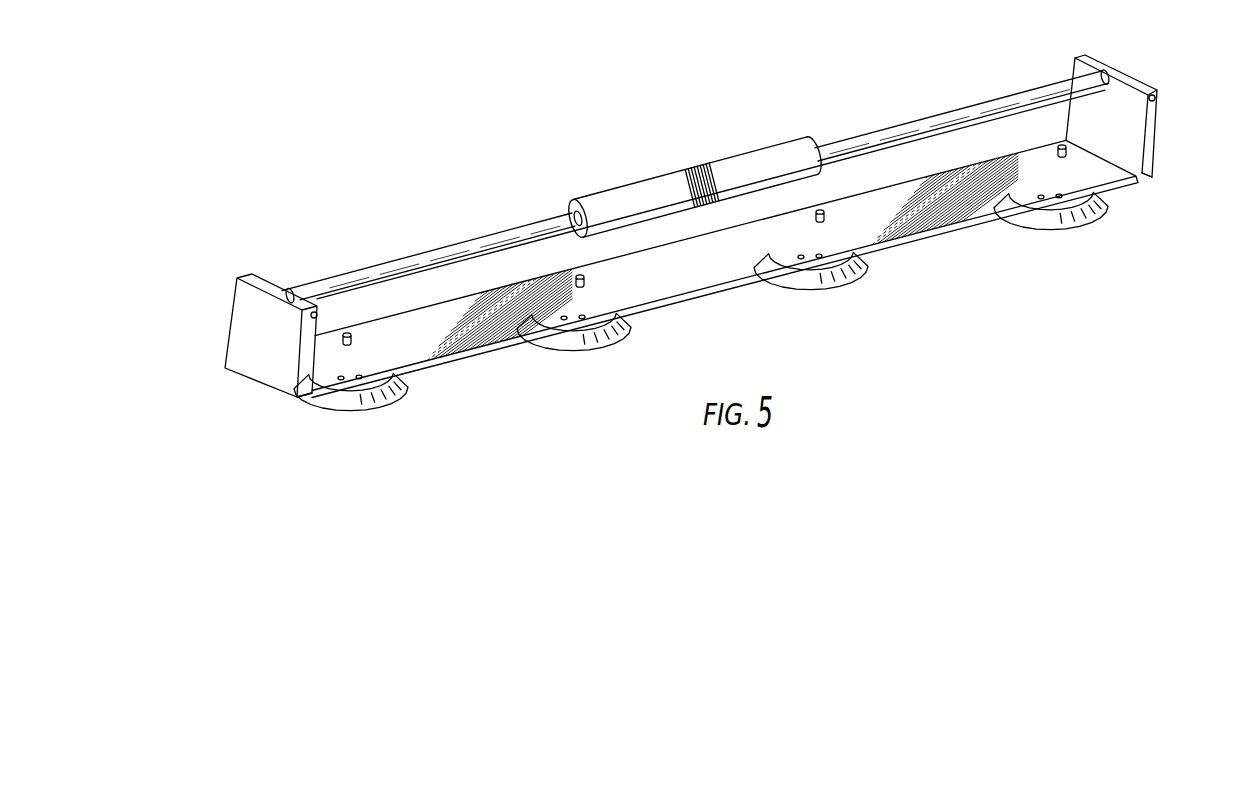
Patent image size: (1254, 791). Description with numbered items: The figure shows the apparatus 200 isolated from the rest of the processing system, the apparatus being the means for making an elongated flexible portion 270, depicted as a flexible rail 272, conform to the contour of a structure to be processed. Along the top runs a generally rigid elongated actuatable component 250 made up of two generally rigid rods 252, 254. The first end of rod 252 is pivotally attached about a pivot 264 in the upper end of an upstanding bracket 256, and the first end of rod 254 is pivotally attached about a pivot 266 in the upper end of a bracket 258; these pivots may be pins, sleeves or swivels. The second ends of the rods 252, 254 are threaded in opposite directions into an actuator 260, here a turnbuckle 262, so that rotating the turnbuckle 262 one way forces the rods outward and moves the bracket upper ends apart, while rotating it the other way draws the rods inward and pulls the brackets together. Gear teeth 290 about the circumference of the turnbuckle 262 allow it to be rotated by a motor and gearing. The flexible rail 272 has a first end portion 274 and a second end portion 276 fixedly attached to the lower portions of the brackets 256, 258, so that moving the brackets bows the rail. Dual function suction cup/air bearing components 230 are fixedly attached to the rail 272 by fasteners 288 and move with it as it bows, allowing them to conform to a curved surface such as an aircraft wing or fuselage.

The apparatus 200 is at (478, 118).
The dual function suction cup/air bearing components 230 is at (372, 400).
The actuatable component 250 is at (768, 100).
The rod 252 is at (988, 105).
The rod 254 is at (345, 280).
The bracket 256 is at (1158, 130).
The bracket 258 is at (248, 335).
The actuator 260 is at (690, 150).
The turnbuckle 262 is at (605, 200).
The pivot 264 is at (1158, 98).
The pivot 266 is at (314, 320).
The flexible portion 270 is at (966, 243).
The flexible rail 272 is at (698, 260).
The first end portion 274 is at (1143, 178).
The second end portion 276 is at (311, 398).
The fasteners 288 is at (357, 345).
The gear teeth 290 is at (712, 178).